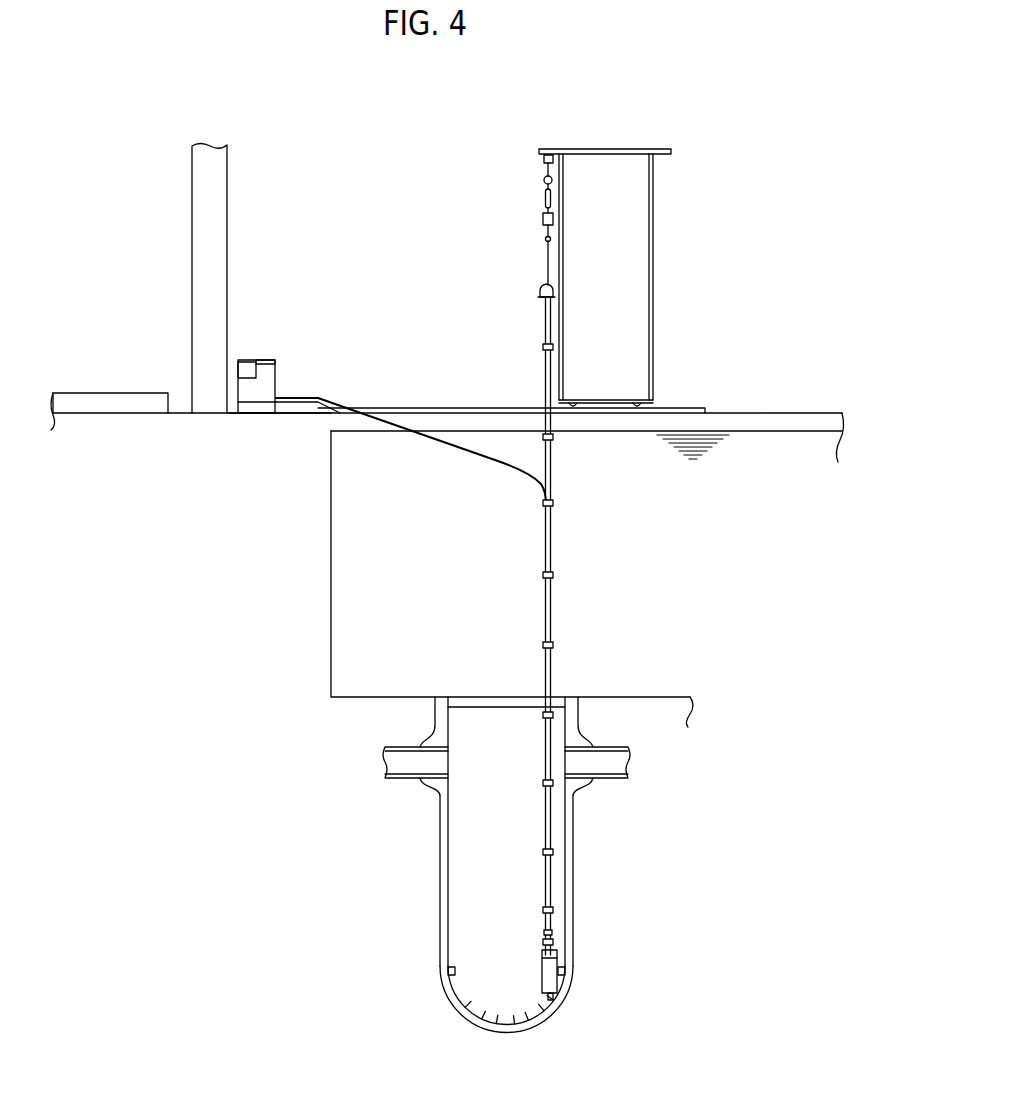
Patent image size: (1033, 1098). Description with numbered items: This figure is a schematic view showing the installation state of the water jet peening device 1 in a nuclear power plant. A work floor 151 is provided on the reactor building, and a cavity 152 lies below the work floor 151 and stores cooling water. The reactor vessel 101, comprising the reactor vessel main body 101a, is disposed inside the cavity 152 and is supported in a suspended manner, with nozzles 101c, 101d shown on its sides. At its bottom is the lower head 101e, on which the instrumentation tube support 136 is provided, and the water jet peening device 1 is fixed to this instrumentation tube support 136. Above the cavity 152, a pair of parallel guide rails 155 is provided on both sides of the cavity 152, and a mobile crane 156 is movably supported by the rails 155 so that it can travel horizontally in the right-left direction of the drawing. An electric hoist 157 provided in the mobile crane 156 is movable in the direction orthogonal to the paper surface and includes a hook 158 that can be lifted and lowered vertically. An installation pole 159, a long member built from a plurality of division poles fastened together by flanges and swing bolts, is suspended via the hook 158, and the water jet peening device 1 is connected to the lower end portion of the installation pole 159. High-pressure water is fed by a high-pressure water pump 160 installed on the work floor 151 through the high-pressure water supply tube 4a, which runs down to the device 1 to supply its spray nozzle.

The water jet peening device 1 is at (563, 958).
The high-pressure water supply tube 4a is at (494, 462).
The reactor vessel 101 is at (576, 865).
The reactor vessel main body 101a is at (575, 808).
The outlet nozzle 101c is at (594, 741).
The inlet nozzle 101d is at (420, 741).
The lower head 101e is at (468, 1023).
The instrumentation tube support 136 is at (461, 1003).
The work floor 151 is at (745, 412).
The cavity 152 is at (398, 660).
The guide rails 155 is at (697, 406).
The mobile crane 156 is at (608, 148).
The electric hoist 157 is at (540, 163).
The hook 158 is at (548, 238).
The installation pole 159 is at (557, 661).
The high-pressure water pump 160 is at (256, 360).